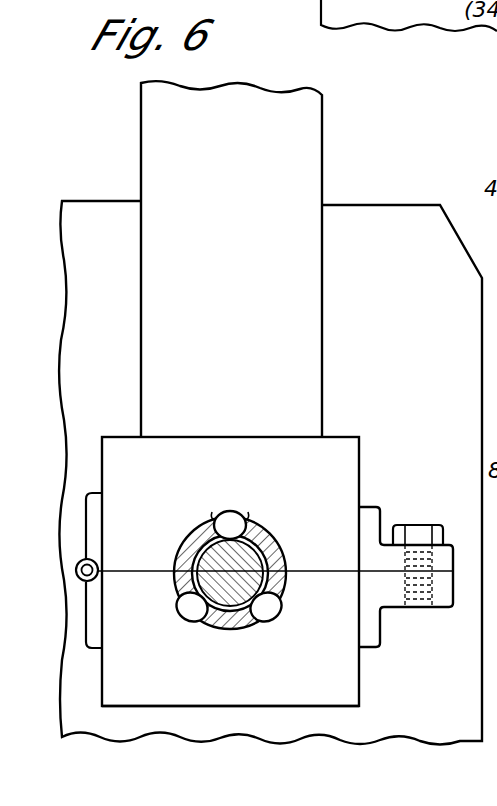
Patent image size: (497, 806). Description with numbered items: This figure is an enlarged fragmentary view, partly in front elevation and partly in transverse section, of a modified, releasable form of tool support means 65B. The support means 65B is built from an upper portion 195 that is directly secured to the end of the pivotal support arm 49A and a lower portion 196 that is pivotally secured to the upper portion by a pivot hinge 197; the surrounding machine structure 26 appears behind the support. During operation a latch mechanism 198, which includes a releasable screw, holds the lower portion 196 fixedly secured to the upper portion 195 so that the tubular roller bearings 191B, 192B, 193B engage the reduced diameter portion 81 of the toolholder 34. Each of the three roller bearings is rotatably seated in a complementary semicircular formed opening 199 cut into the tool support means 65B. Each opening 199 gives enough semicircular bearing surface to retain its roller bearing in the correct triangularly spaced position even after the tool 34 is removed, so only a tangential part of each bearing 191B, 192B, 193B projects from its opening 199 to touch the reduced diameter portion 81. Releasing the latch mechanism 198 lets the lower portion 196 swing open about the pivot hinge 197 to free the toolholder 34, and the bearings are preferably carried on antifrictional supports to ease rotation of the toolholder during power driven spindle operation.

The frame body 26 is at (418, 300).
The toolholder 34 is at (262, 550).
The pivotal support arm 49A is at (310, 141).
The tool support means 65B is at (350, 418).
The reduced diameter portion 81 is at (186, 546).
The tubular roller bearing 191B is at (233, 520).
The tubular roller bearing 192B is at (178, 600).
The tubular roller bearing 193B is at (280, 603).
The upper portion 195 is at (345, 457).
The lower portion 196 is at (343, 687).
The pivot hinge 197 is at (93, 495).
The latch mechanism 198 is at (415, 518).
The semicircular bearing opening 199 is at (224, 508).